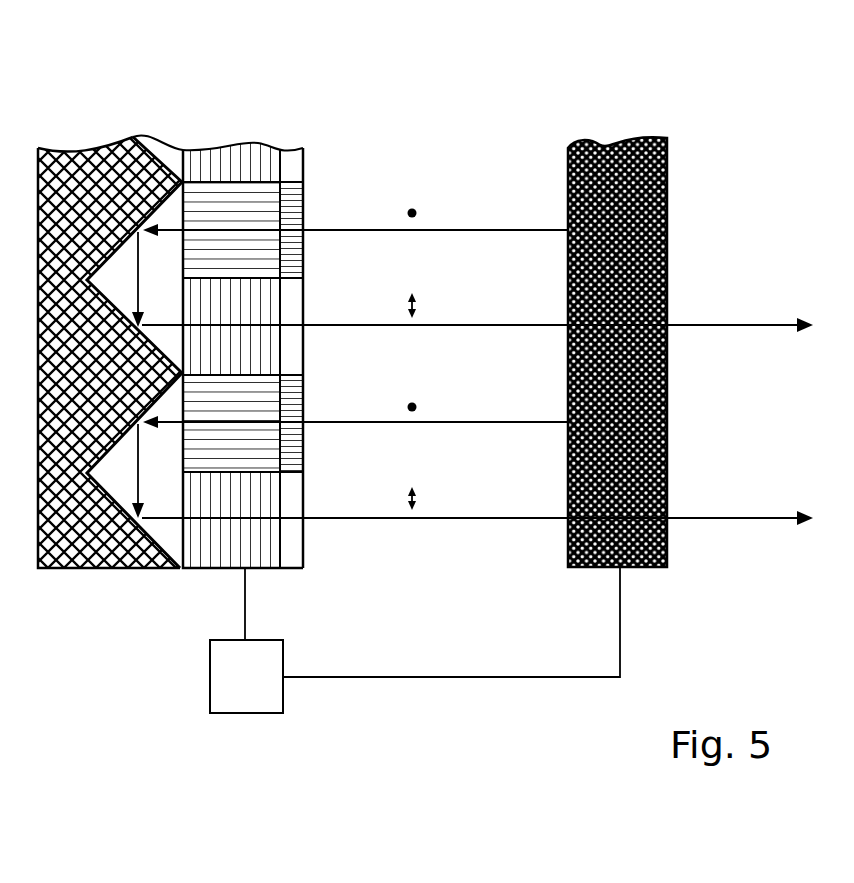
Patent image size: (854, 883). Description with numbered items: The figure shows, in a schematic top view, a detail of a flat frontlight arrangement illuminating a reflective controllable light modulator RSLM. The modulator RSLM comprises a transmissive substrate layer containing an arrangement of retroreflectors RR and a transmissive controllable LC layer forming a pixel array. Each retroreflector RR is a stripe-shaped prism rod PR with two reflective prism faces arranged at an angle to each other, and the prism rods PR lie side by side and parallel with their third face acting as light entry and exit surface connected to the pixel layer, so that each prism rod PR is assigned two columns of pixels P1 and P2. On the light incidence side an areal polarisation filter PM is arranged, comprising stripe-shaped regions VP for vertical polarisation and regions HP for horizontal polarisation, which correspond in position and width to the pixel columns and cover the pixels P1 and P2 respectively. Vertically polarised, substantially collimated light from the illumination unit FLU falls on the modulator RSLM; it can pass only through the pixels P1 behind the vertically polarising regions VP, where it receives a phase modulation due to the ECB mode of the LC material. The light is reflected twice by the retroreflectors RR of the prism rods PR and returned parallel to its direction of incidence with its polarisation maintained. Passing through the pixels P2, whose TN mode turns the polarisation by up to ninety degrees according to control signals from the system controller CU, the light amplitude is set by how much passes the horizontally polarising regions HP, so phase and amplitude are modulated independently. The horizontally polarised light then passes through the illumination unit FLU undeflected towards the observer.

The reflective controllable light modulator RSLM is at (294, 330).
The illumination unit FLU is at (605, 103).
The pixel P1 is at (273, 214).
The pixel P2 is at (274, 320).
The region for vertical polarisation VP is at (296, 272).
The region for horizontal polarisation HP is at (298, 370).
The areal polarisation filter PM is at (315, 555).
The retroreflector RR is at (119, 550).
The prism rod PR is at (174, 544).
The system controller CU is at (415, 640).